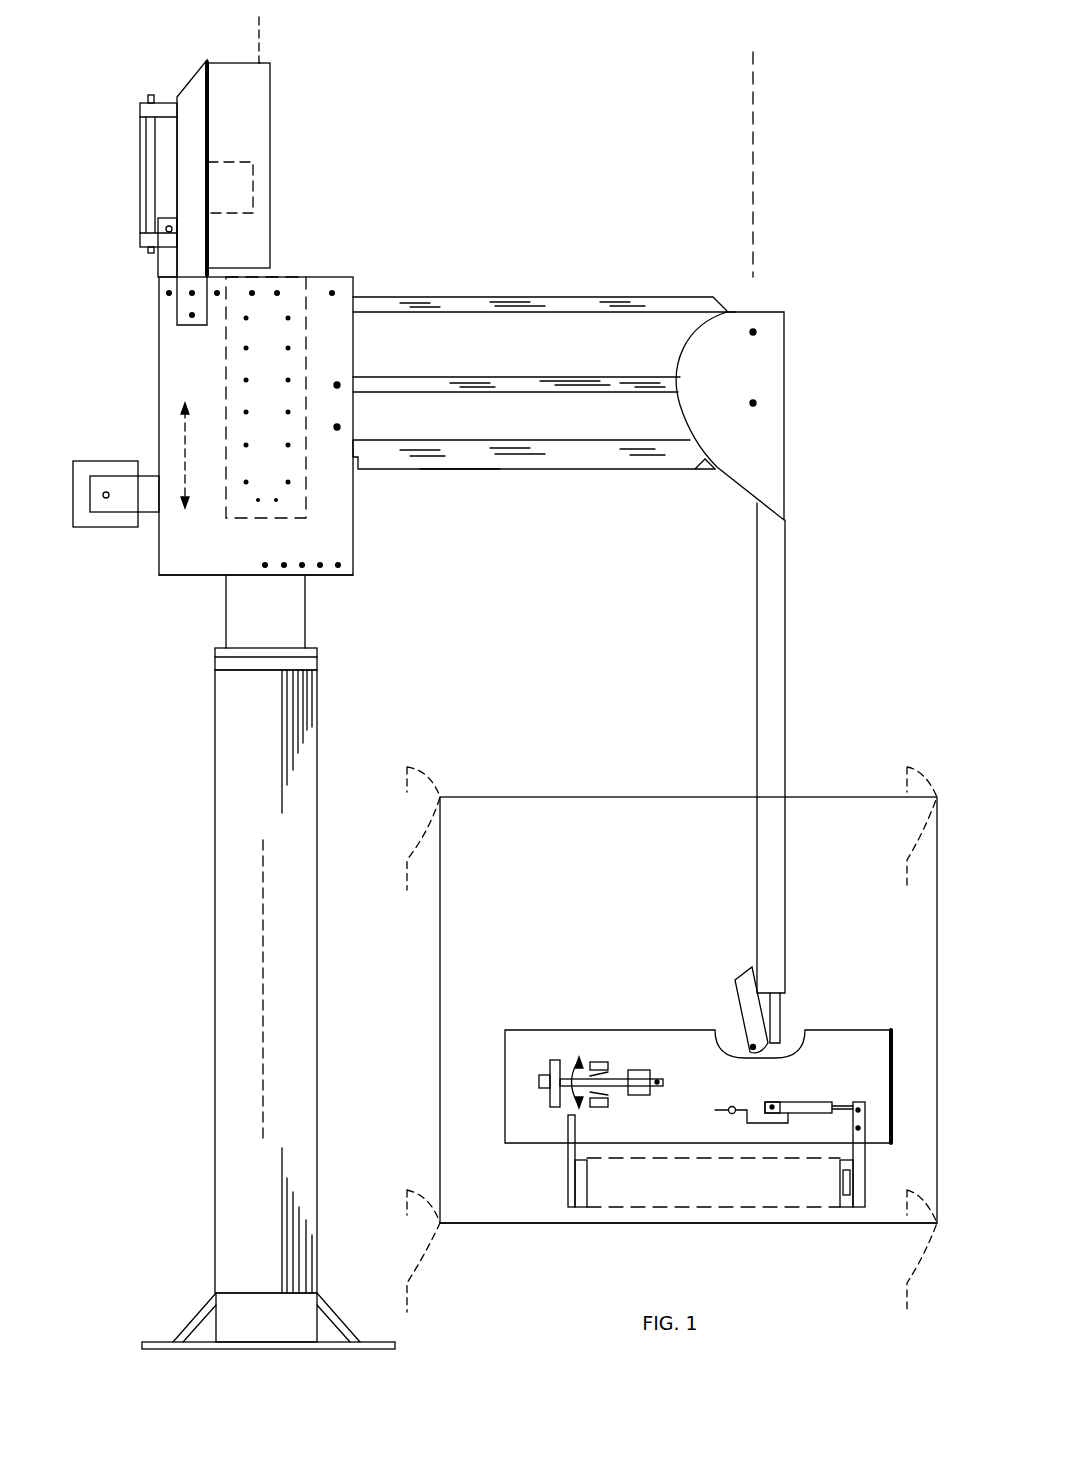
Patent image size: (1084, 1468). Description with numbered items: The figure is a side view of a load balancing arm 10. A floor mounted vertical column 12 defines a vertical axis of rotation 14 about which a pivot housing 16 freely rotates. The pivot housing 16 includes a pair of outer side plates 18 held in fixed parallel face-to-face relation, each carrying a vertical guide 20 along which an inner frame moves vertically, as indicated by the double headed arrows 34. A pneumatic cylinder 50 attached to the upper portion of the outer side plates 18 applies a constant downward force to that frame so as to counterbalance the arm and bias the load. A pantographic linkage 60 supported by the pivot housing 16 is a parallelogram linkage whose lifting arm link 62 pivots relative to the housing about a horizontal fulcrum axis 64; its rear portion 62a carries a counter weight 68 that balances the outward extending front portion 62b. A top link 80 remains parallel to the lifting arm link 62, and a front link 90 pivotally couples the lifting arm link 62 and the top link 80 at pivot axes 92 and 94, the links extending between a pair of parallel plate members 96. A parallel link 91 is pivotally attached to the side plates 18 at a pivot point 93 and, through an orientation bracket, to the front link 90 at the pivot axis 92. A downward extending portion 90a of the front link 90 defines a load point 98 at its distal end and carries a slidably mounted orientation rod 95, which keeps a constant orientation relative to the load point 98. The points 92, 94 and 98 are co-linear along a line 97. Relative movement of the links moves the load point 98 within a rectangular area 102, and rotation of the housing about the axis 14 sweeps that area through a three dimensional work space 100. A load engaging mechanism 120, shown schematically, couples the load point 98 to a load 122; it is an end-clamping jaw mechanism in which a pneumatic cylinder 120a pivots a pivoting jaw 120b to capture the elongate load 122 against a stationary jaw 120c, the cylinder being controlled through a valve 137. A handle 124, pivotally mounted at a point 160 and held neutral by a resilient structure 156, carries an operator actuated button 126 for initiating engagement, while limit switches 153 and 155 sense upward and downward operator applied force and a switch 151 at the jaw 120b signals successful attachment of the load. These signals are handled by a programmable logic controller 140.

The load balancing arm 10 is at (203, 757).
The vertical column 12 is at (318, 1168).
The vertical axis of rotation 14 is at (262, 62).
The pivot housing 16 is at (360, 290).
The outer side plates 18 is at (186, 565).
The vertical guide 20 is at (226, 387).
The double headed arrows 34 is at (184, 441).
The pneumatic cylinder 50 is at (166, 170).
The pantographic linkage 60 is at (655, 297).
The lifting arm link 62 is at (632, 470).
The rear portion 62a is at (147, 507).
The front portion 62b is at (458, 469).
The fulcrum axis 64 is at (337, 430).
The counter weight 68 is at (115, 467).
The top link 80 is at (512, 297).
The front link 90 is at (784, 372).
The downward extending portion 90a is at (786, 712).
The parallel link 91 is at (525, 380).
The pivot axis 92 is at (756, 403).
The pivot point 93 is at (337, 383).
The pivot axis 94 is at (753, 330).
The orientation rod 95 is at (782, 1040).
The plate members 96 is at (748, 465).
The line 97 is at (753, 147).
The load point 98 is at (766, 1050).
The three dimensional work space 100 is at (426, 1258).
The rectangular area 102 is at (636, 1222).
The load engaging mechanism 120 is at (892, 1030).
The pneumatic cylinder 120a is at (818, 1114).
The pivoting jaw 120b is at (868, 1117).
The stationary jaw 120c is at (568, 1137).
The load 122 is at (568, 1185).
The handle 124 is at (553, 1060).
The operator actuated button 126 is at (538, 1080).
The valve 137 is at (735, 1103).
The programmable logic controller 140 is at (253, 197).
The switch 151 is at (846, 1210).
The limit switch 153 is at (606, 1067).
The limit switch 155 is at (608, 1100).
The resilient structure 156 is at (647, 1072).
The point 160 is at (663, 1083).